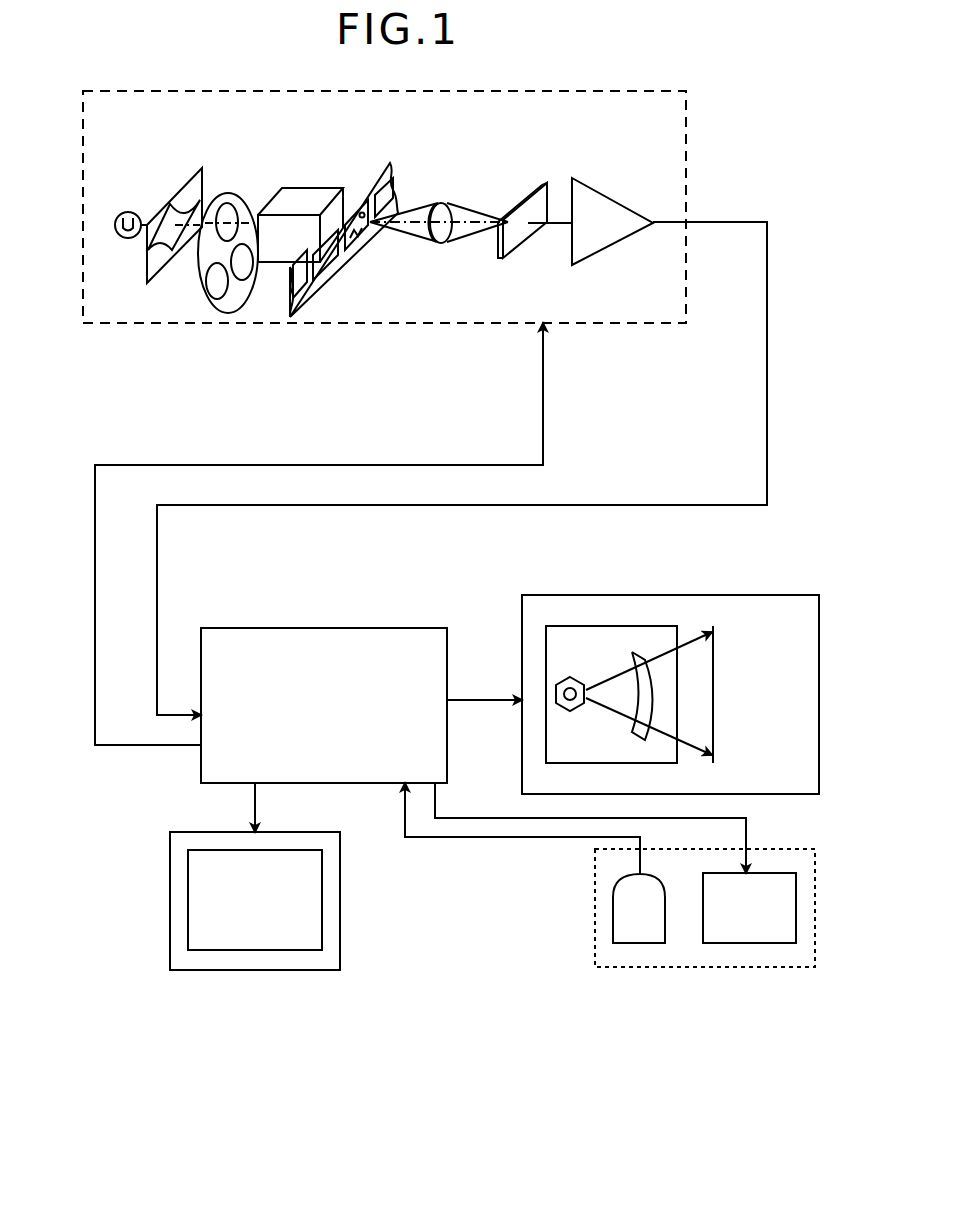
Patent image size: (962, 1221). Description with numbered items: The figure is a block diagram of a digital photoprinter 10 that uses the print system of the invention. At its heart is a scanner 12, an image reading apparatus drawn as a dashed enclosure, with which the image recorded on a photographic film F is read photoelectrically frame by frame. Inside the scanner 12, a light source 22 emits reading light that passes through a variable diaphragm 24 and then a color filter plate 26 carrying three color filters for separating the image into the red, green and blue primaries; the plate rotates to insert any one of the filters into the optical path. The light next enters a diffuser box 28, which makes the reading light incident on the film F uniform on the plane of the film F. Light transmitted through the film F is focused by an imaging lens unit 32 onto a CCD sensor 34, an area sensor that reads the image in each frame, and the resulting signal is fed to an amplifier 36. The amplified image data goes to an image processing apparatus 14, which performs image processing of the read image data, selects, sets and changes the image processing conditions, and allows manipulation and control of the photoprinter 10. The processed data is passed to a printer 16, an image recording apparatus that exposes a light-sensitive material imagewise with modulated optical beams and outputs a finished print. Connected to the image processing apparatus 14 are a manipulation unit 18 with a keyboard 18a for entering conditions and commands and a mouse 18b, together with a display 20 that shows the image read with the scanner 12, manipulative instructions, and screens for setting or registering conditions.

The digital photoprinter 10 is at (750, 110).
The scanner 12 is at (145, 328).
The image processing apparatus 14 is at (325, 628).
The printer 16 is at (665, 595).
The manipulation unit 18 is at (704, 956).
The keyboard 18a is at (750, 945).
The mouse 18b is at (633, 945).
The display 20 is at (250, 972).
The light source 22 is at (127, 213).
The variable diaphragm 24 is at (180, 190).
The color filter plate 26 is at (223, 195).
The diffuser box 28 is at (297, 207).
The photographic film F is at (372, 187).
The imaging lens unit 32 is at (442, 202).
The CCD sensor 34 is at (527, 198).
The amplifier 36 is at (613, 245).